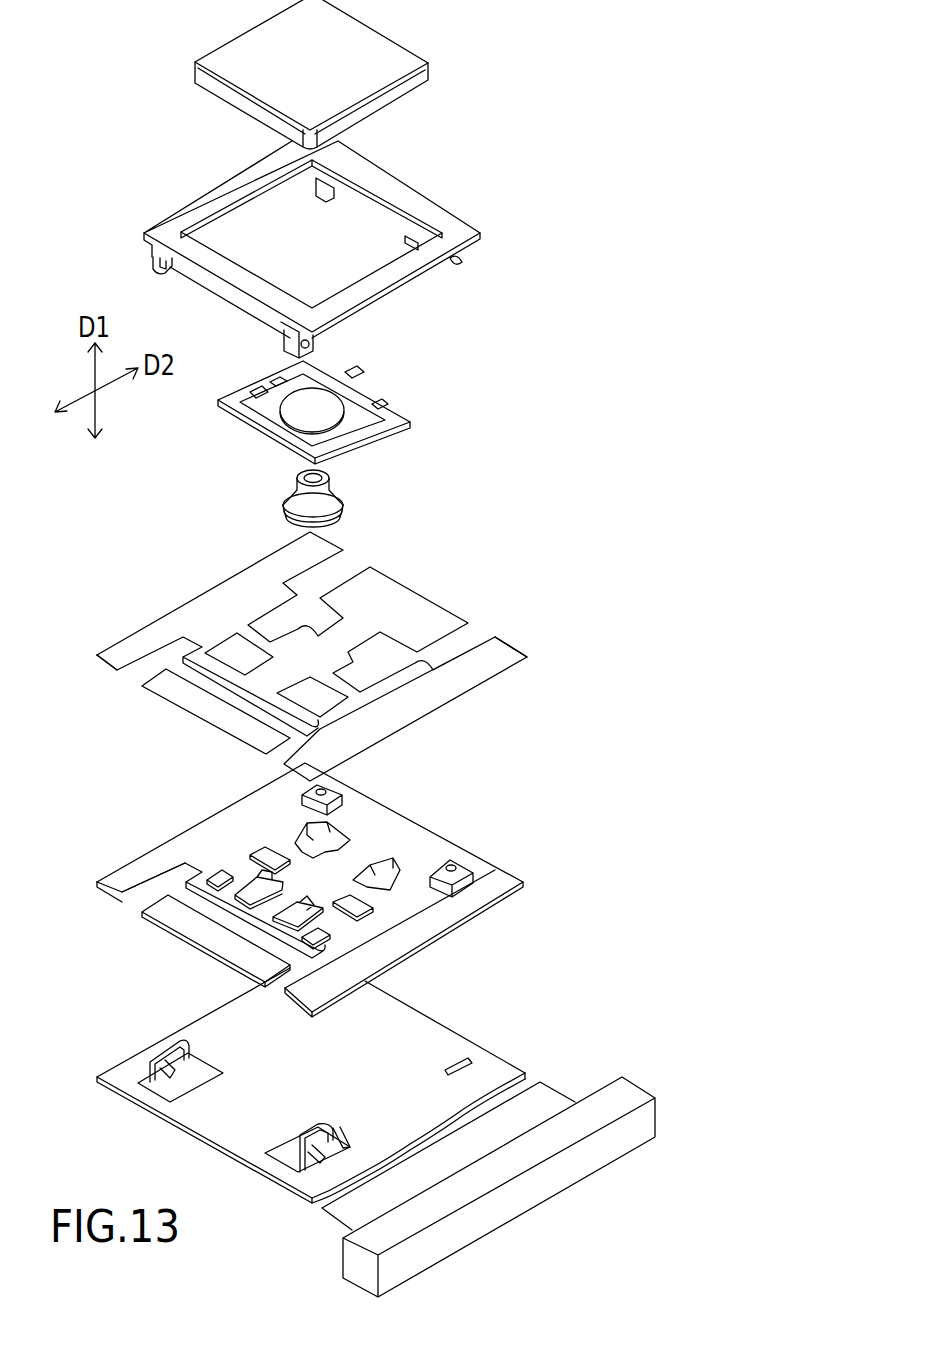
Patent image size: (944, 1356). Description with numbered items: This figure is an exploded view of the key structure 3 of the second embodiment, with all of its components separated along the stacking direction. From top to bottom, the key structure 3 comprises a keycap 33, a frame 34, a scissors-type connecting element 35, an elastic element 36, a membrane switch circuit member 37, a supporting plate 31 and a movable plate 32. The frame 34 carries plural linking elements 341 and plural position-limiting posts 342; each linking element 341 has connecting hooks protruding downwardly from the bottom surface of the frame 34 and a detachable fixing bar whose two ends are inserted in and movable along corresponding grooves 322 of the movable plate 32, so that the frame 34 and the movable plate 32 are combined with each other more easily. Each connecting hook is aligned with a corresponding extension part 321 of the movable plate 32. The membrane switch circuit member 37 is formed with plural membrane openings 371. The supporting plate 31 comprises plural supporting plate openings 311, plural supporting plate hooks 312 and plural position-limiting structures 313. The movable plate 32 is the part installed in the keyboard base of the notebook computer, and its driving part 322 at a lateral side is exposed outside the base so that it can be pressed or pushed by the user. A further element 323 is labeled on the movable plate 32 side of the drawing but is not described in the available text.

The key structure 3 is at (134, 45).
The keycap 33 is at (367, 46).
The frame 34 is at (324, 249).
The linking element 341 is at (292, 351).
The position-limiting post 342 is at (458, 265).
The scissors-type connecting element 35 is at (262, 420).
The elastic element 36 is at (325, 492).
The membrane switch circuit member 37 is at (319, 656).
The membrane opening 371 is at (479, 637).
The supporting plate 31 is at (313, 890).
The supporting plate opening 311 is at (137, 903).
The supporting plate hook 312 is at (321, 902).
The position-limiting structure 313 is at (464, 868).
The movable plate 32 is at (369, 1132).
The extension part 321 is at (152, 1052).
The groove 322 is at (340, 1148).
The connector 323 is at (567, 1168).